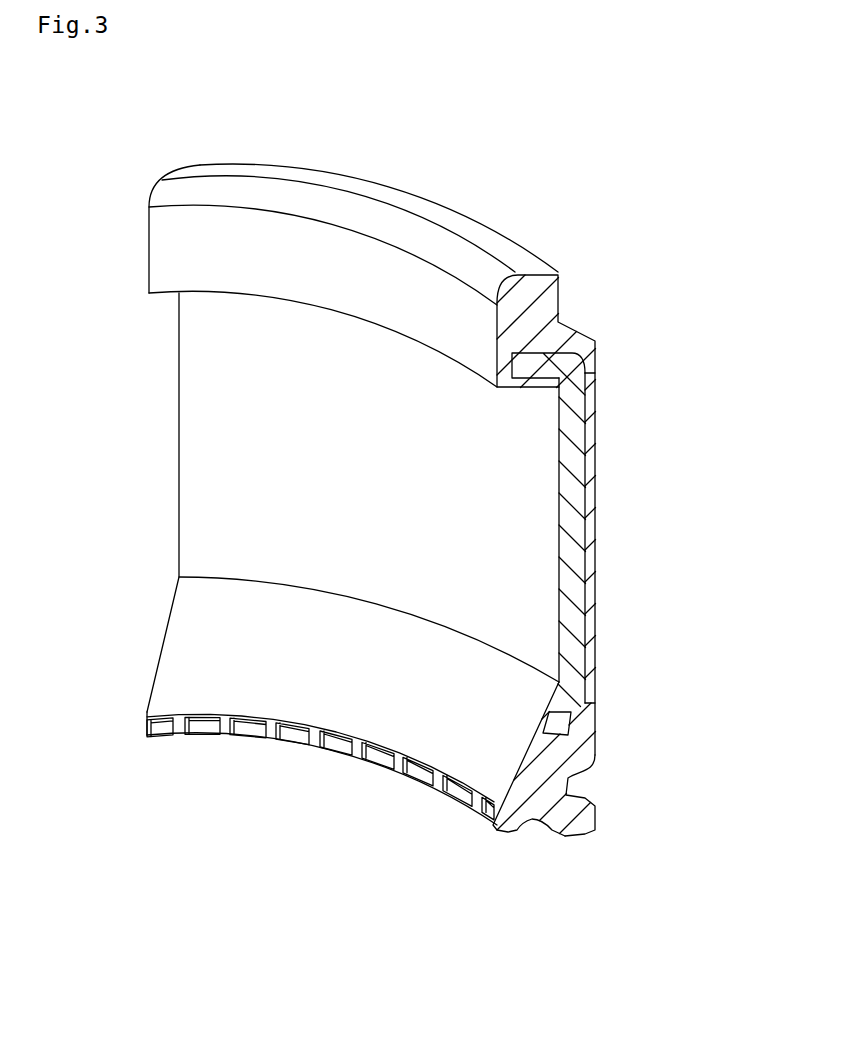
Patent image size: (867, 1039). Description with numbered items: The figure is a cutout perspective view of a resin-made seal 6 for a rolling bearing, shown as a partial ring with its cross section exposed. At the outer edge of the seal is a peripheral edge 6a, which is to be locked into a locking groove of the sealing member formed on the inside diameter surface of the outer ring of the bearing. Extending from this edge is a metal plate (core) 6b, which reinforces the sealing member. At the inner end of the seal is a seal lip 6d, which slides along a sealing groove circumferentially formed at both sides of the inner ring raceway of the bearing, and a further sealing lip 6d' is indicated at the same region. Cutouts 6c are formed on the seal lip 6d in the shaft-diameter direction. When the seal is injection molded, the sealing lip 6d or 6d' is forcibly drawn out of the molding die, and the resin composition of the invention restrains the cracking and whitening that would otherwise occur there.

The resin-made seal 6 is at (607, 367).
The peripheral edge 6a is at (525, 290).
The metal plate (core) 6b is at (567, 513).
The cutouts 6c is at (443, 770).
The seal lip 6d is at (617, 759).
The sealing lip 6d' is at (663, 803).